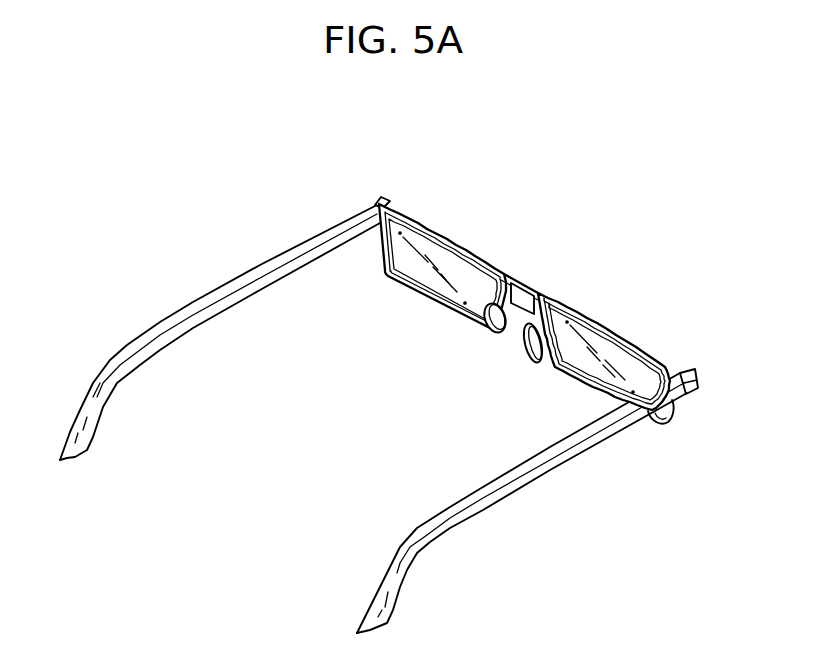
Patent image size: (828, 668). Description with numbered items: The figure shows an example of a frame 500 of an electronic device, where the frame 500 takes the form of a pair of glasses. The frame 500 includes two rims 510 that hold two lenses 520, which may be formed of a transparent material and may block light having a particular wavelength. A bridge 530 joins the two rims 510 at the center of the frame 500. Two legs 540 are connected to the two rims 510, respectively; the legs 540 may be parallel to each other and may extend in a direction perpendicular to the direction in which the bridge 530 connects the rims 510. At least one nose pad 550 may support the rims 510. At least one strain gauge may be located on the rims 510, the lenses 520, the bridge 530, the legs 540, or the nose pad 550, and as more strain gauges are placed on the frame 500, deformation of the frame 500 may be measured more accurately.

The frame 500 is at (411, 162).
The rims 510 is at (378, 272).
The lenses 520 is at (447, 250).
The bridge 530 is at (531, 282).
The legs 540 is at (223, 293).
The nose pad 550 is at (527, 349).